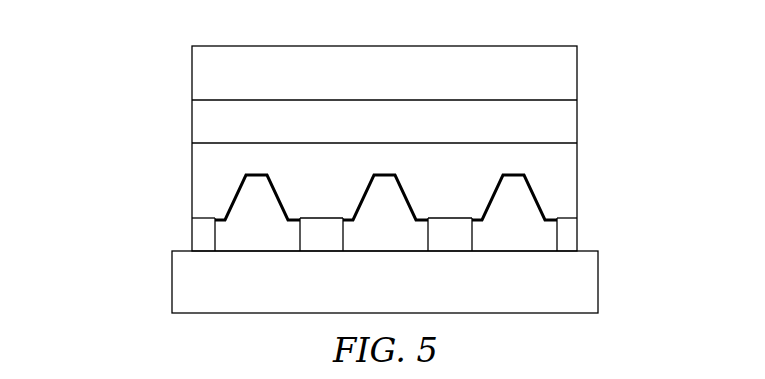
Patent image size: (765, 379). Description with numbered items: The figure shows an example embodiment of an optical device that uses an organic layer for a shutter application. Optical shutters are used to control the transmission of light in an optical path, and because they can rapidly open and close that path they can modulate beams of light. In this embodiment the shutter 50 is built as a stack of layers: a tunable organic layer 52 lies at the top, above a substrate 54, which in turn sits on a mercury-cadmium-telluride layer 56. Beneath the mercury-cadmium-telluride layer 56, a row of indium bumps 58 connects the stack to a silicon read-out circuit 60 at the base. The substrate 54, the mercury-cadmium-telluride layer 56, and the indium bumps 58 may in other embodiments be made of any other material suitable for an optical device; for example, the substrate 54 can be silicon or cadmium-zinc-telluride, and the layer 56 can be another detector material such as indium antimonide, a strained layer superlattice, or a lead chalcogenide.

The shutter 50 is at (624, 68).
The tunable organic layer 52 is at (181, 50).
The substrate 54 is at (568, 120).
The mercury-cadmium-telluride layer 56 is at (567, 173).
The indium bumps 58 is at (202, 237).
The silicon read-out circuit 60 is at (399, 293).